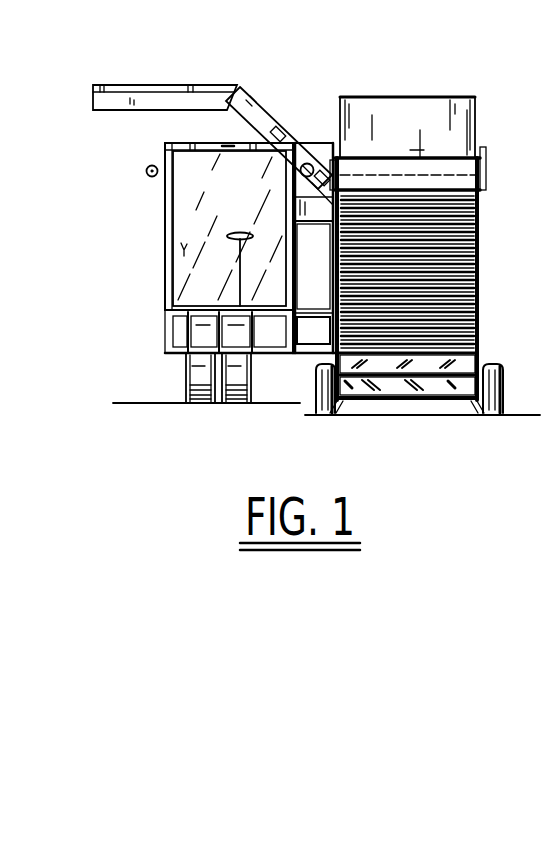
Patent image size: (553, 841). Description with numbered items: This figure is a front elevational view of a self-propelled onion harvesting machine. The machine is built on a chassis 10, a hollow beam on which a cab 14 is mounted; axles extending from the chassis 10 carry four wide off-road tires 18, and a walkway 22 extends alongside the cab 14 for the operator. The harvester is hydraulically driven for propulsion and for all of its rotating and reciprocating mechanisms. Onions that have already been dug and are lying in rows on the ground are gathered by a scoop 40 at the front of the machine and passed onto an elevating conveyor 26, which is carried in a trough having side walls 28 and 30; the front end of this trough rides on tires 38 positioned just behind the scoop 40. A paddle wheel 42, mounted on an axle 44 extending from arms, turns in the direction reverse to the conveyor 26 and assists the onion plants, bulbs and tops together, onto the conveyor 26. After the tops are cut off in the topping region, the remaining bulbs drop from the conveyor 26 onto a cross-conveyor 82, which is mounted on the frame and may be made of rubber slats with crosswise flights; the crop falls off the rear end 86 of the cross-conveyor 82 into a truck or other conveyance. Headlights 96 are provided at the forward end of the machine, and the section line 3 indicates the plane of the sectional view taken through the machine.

The section line 3 is at (427, 72).
The chassis 10 is at (303, 356).
The cab 14 is at (178, 144).
The off-road tires 18 is at (186, 375).
The walkway 22 is at (315, 312).
The elevating conveyor 26 is at (480, 238).
The side wall 28 is at (330, 262).
The side wall 30 is at (478, 304).
The tires 38 is at (497, 364).
The scoop 40 is at (473, 404).
The paddle wheel 42 is at (443, 396).
The axle 44 is at (367, 378).
The cross-conveyor 82 is at (248, 98).
The rear end 86 is at (93, 86).
The headlights 96 is at (308, 163).